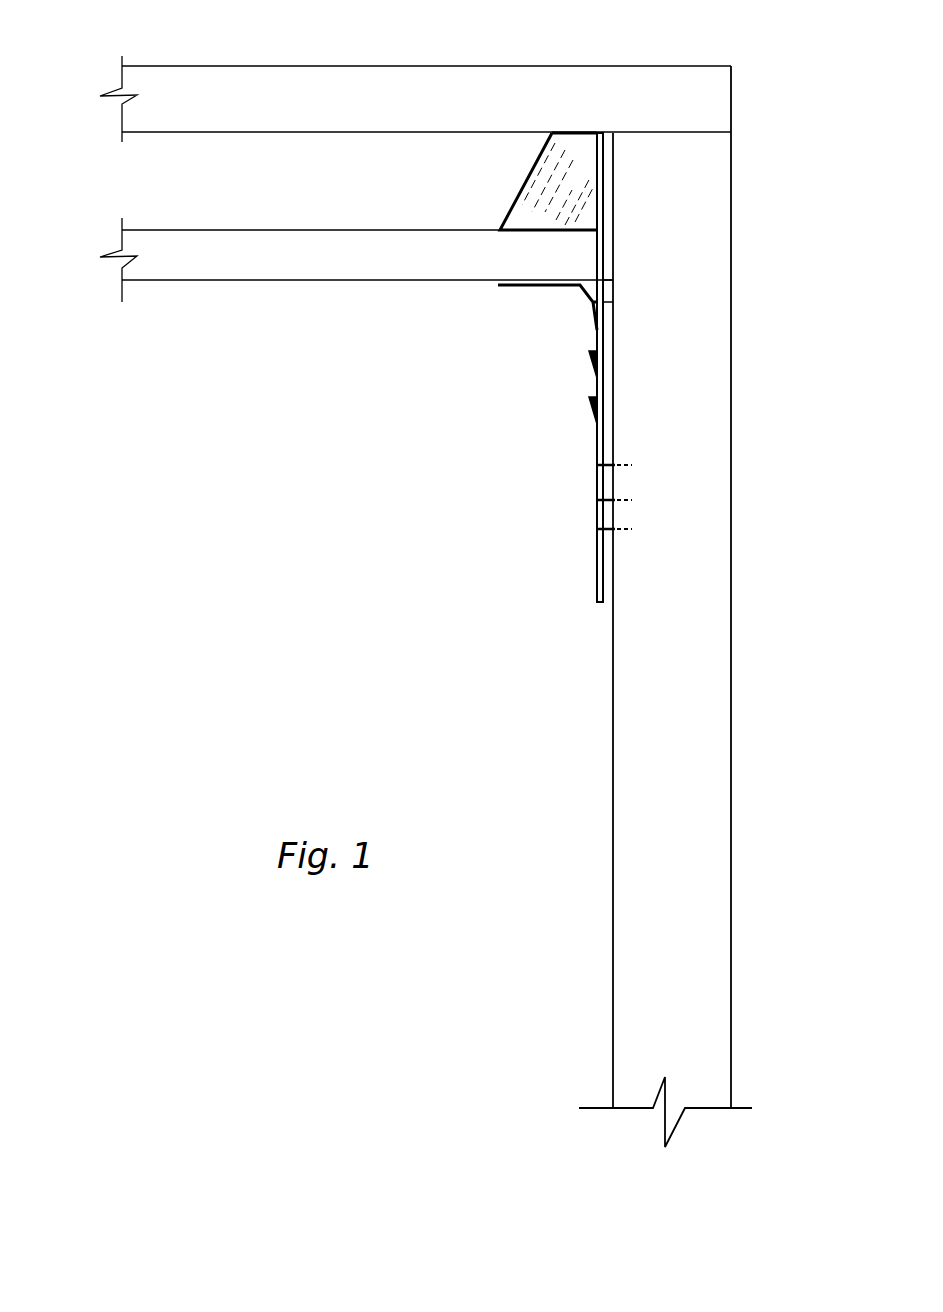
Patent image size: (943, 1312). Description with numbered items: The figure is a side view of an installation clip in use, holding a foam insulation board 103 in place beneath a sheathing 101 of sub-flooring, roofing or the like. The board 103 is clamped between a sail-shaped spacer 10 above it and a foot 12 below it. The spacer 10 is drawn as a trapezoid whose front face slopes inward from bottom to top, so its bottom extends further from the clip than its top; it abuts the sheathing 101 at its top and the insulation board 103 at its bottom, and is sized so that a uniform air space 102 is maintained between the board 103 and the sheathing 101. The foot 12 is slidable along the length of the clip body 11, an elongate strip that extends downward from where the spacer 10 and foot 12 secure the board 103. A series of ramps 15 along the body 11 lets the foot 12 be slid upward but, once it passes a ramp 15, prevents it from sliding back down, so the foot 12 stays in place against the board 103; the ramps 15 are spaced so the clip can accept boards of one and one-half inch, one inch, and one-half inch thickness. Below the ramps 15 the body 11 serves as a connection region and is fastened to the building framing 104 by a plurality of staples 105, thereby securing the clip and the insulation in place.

The sheathing 101 is at (421, 82).
The sail-shaped spacer 10 is at (577, 152).
The framing 104 is at (710, 272).
The foam insulation board 103 is at (262, 260).
The air space 102 is at (148, 182).
The clip body 11 is at (597, 566).
The foot 12 is at (505, 289).
The ramps 15 is at (590, 397).
The staples 105 is at (597, 530).